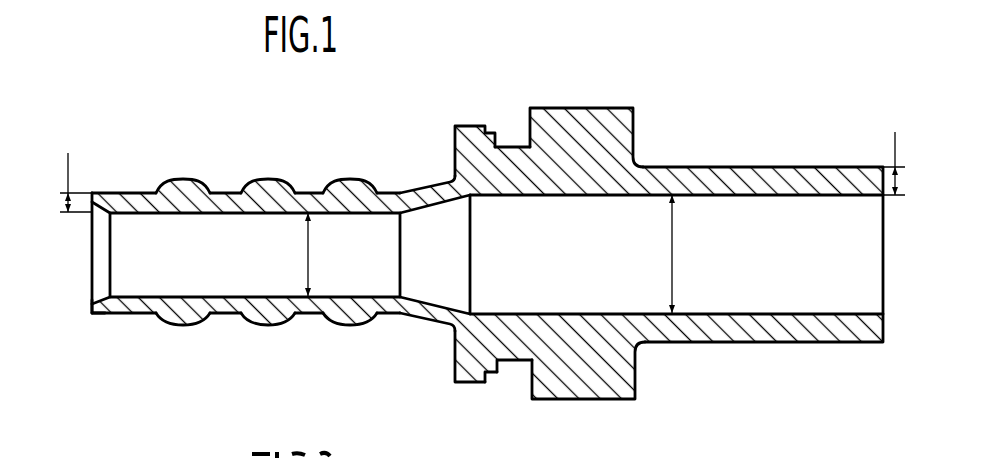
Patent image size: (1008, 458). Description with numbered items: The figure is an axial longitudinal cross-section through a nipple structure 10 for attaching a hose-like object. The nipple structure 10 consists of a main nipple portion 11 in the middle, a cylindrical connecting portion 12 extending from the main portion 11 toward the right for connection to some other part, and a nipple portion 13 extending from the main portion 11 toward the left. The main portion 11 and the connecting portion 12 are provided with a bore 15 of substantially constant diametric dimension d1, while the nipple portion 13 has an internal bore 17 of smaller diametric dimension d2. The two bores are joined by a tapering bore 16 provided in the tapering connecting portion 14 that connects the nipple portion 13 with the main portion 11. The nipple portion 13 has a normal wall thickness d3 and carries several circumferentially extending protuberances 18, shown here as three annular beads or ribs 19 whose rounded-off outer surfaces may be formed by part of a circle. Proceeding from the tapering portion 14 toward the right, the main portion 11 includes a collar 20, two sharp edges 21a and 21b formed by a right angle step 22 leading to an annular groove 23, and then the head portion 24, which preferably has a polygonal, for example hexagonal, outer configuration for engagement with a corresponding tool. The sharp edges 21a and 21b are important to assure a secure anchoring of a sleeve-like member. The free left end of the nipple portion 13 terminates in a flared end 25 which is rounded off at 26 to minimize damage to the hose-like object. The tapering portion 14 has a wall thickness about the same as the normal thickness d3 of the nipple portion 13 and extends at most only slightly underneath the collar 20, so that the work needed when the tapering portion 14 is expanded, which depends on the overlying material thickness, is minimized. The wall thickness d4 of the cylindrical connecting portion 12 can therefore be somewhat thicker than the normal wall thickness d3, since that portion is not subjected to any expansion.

The nipple structure 10 is at (628, 94).
The main nipple portion 11 is at (548, 105).
The cylindrical connecting portion 12 is at (692, 163).
The nipple portion 13 is at (224, 188).
The tapering connecting portion 14 is at (430, 323).
The bore 15 is at (737, 313).
The tapering bore 16 is at (432, 201).
The internal bore 17 is at (159, 297).
The circumferentially extending protuberances 18 is at (266, 318).
The annular beads or ribs 19 is at (188, 181).
The collar 20 is at (457, 378).
The sharp edge 21a is at (488, 376).
The sharp edge 21b is at (494, 372).
The right angle step 22 is at (491, 127).
The annular groove 23 is at (510, 146).
The head portion 24 is at (600, 108).
The flared end 25 is at (102, 255).
The rounded-off portion 26 is at (92, 308).
The diametric dimension of bore d1 is at (687, 254).
The diametric dimension of internal bore d2 is at (323, 254).
The normal wall thickness of nipple portion d3 is at (79, 176).
The wall thickness of connecting portion d4 is at (883, 155).